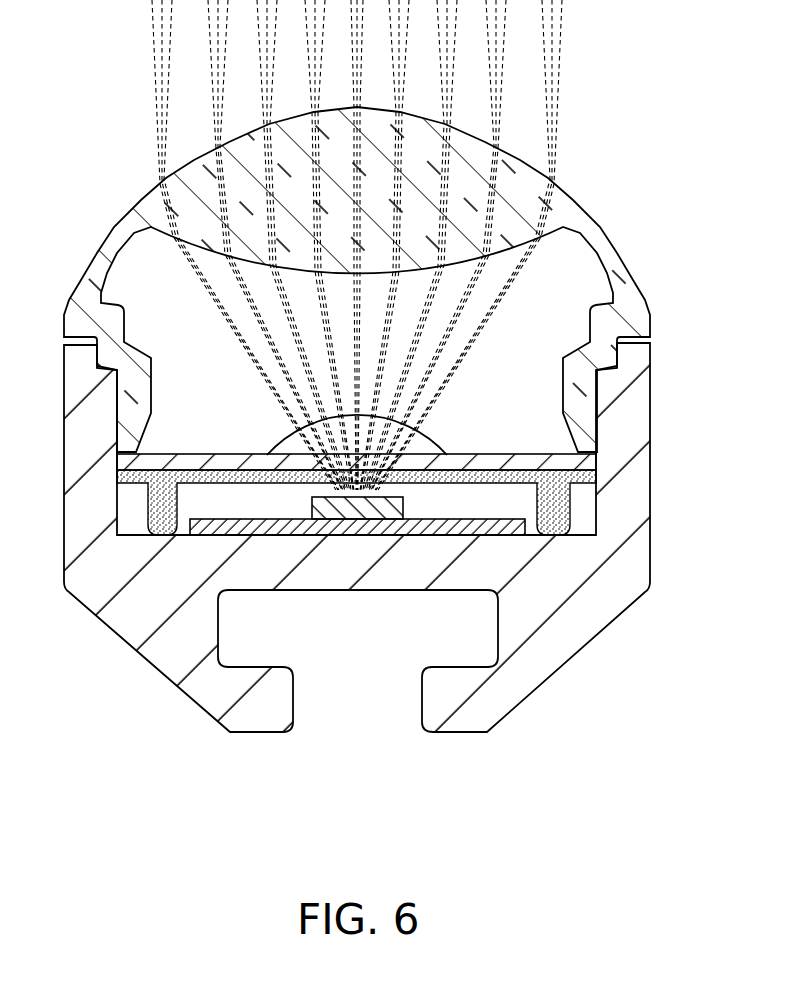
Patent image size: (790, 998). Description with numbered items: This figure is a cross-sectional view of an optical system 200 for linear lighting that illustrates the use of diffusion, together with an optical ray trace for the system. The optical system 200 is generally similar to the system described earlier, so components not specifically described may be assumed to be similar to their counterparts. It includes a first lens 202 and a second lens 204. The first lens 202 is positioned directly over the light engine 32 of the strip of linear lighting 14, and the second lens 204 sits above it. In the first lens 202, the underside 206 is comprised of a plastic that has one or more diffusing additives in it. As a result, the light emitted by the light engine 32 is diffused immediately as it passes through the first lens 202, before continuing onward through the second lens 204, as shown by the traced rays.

The optical system 200 is at (110, 193).
The first lens 202 is at (222, 452).
The second lens 204 is at (577, 203).
The underside 206 is at (255, 485).
The linear lighting 14 is at (502, 517).
The light engine 32 is at (403, 503).